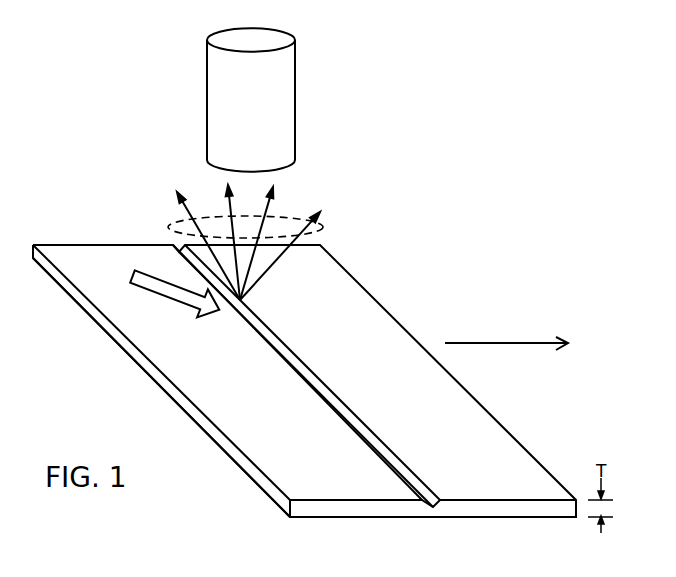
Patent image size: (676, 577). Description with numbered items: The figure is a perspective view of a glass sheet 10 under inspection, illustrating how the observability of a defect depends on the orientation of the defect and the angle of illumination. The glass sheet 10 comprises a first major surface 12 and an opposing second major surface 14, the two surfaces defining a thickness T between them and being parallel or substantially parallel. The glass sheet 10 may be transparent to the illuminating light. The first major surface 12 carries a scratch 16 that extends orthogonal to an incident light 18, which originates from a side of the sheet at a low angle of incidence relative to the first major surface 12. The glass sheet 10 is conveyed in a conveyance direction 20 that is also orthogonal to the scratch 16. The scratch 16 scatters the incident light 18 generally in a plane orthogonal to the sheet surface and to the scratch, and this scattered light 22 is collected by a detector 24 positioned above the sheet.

The glass sheet 10 is at (371, 294).
The first major surface 12 is at (77, 252).
The second major surface 14 is at (135, 361).
The scratch 16 is at (317, 380).
The incident light 18 is at (153, 293).
The conveyance direction 20 is at (483, 343).
The scattered light 22 is at (330, 228).
The detector 24 is at (295, 98).